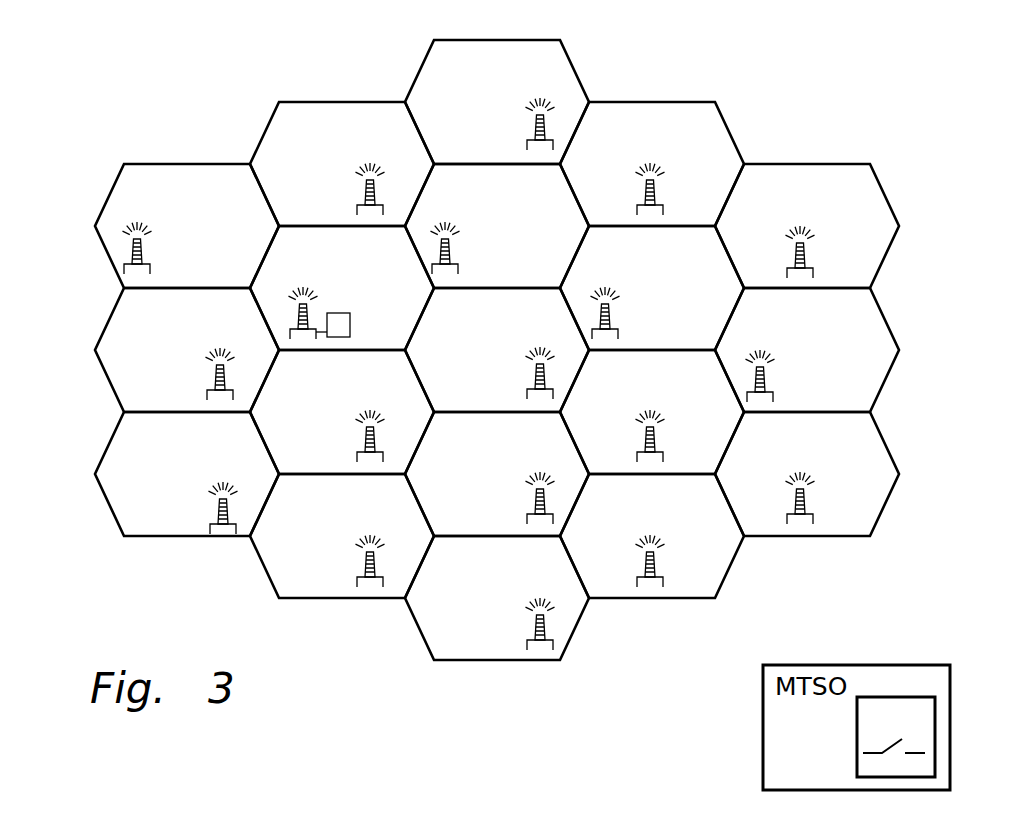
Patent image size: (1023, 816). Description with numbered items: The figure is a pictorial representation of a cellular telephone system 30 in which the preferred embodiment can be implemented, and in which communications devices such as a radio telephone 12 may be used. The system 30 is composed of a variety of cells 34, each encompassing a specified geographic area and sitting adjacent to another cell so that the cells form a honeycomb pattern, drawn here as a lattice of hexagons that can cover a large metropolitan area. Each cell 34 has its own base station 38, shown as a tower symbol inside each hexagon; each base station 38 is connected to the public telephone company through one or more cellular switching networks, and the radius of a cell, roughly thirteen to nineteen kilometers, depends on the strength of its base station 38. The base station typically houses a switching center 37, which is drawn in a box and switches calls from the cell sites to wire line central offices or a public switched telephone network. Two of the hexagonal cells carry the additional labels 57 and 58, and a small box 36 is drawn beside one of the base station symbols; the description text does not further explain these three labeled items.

The radio telephone 12 is at (162, 178).
The cellular telephone system 30 is at (801, 70).
The cell 34 is at (733, 565).
The mobile station 36 is at (340, 337).
The switching center 37 is at (935, 735).
The base station 38 is at (552, 623).
The cell 57 is at (238, 201).
The cell 58 is at (393, 263).